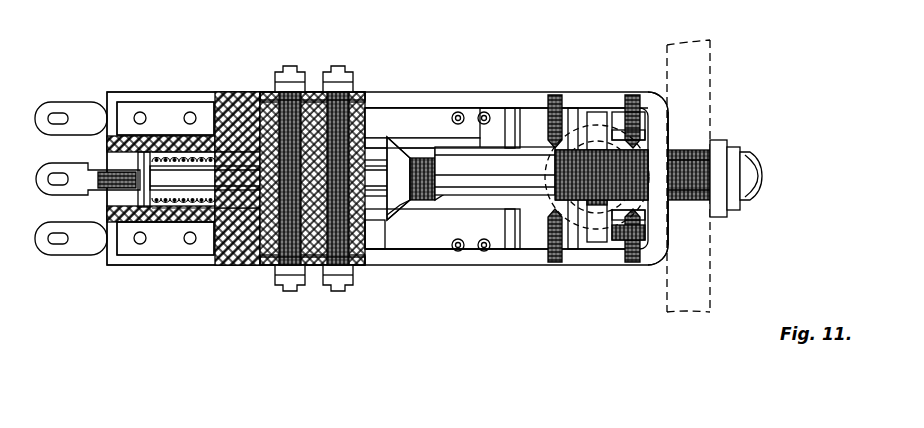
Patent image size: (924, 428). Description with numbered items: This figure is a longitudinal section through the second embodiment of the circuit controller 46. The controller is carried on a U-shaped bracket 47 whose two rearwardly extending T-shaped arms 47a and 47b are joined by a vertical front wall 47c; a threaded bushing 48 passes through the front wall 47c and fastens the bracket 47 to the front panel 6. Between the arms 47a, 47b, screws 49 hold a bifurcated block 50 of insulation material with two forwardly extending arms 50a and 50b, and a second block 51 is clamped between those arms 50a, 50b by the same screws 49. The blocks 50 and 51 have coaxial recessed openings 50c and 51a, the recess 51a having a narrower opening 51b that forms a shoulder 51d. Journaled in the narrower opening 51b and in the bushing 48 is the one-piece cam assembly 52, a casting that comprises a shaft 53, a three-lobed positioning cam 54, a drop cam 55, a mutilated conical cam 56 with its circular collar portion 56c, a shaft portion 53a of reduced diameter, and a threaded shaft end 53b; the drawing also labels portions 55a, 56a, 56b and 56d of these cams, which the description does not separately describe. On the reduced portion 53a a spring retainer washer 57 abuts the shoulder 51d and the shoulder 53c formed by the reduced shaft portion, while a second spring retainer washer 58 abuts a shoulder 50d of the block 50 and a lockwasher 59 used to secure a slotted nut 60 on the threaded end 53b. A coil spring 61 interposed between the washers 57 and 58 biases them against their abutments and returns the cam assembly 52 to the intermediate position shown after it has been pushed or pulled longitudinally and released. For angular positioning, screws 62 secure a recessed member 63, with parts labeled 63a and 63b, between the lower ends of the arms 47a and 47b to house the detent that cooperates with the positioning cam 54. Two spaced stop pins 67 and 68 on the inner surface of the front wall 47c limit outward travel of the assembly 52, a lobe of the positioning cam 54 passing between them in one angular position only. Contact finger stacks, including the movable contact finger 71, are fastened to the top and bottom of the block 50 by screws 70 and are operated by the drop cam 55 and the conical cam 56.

The front panel 6 is at (710, 55).
The circuit controller 46 is at (100, 42).
The U-shaped bracket 47 is at (487, 110).
The T-shaped arm 47a is at (445, 108).
The T-shaped arm 47b is at (473, 263).
The front wall 47c is at (660, 125).
The threaded bushing 48 is at (718, 217).
The screws 49 is at (350, 65).
The block of insulation material 50 is at (228, 258).
The arm of block 50a is at (300, 92).
The arm of block 50b is at (318, 270).
The recessed opening 50c is at (190, 255).
The shoulder 50d is at (71, 118).
The second block 51 is at (375, 125).
The recessed opening 51a is at (268, 95).
The narrower opening 51b is at (422, 128).
The shoulder 51d is at (278, 290).
The cam assembly 52 is at (528, 128).
The shaft 53 is at (575, 130).
The shaft portion of reduced diameter 53a is at (190, 200).
The threaded shaft end 53b is at (98, 190).
The shoulder 53c is at (255, 258).
The three-lobed positioning cam 54 is at (597, 118).
The drop cam 55 is at (525, 185).
The shaft nose 55a is at (450, 175).
The mutilated conical cam 56 is at (425, 185).
The plunger edge 56a is at (405, 225).
The plunger seat 56b is at (393, 220).
The collar portion 56c is at (415, 160).
The screws 56d is at (452, 181).
The spring retainer washer 57 is at (300, 168).
The second spring retainer washer 58 is at (138, 205).
The lockwasher 59 is at (71, 238).
The slotted nut 60 is at (75, 163).
The coil spring 61 is at (165, 118).
The screws 62 is at (555, 95).
The recessed member 63 is at (565, 262).
The bearing block part 63a is at (575, 262).
The bearing block part 63b is at (600, 262).
The stop pin 67 is at (660, 230).
The stop pin 68 is at (660, 112).
The screws 70 is at (190, 112).
The movable contact finger 71 is at (125, 108).